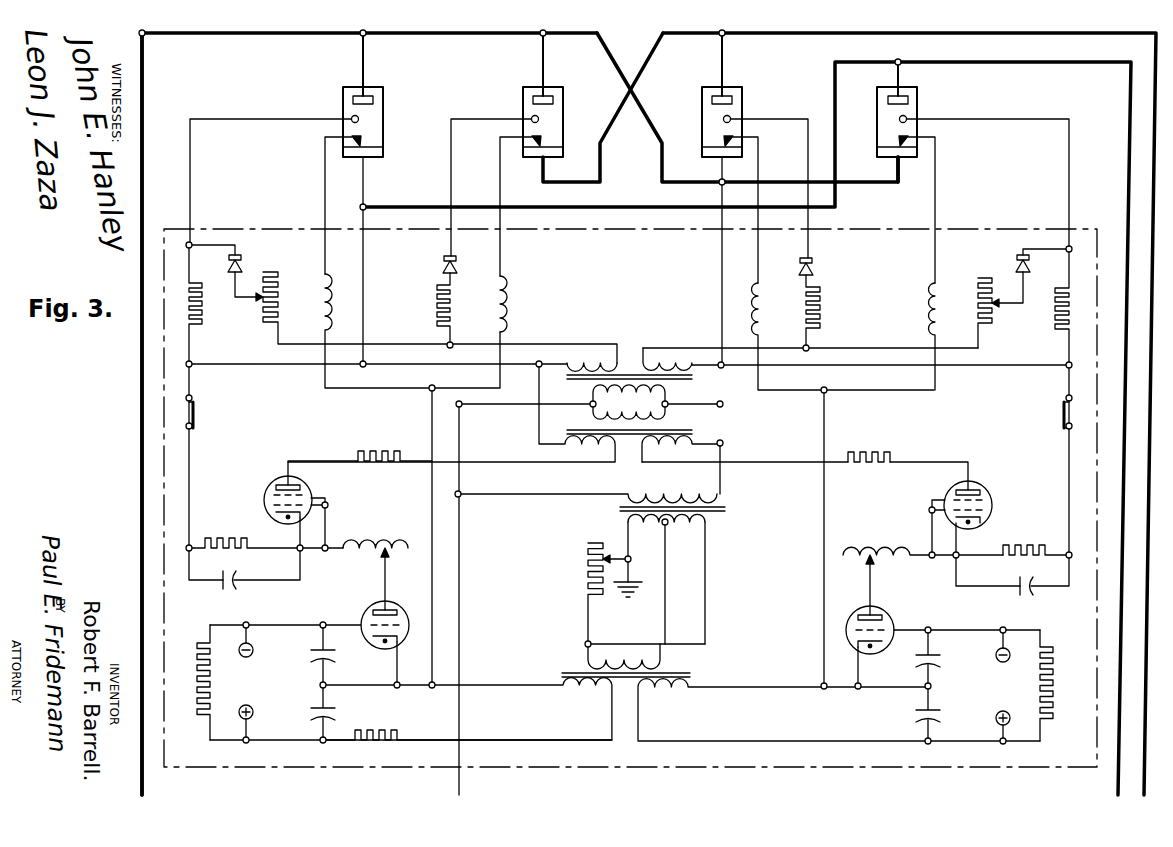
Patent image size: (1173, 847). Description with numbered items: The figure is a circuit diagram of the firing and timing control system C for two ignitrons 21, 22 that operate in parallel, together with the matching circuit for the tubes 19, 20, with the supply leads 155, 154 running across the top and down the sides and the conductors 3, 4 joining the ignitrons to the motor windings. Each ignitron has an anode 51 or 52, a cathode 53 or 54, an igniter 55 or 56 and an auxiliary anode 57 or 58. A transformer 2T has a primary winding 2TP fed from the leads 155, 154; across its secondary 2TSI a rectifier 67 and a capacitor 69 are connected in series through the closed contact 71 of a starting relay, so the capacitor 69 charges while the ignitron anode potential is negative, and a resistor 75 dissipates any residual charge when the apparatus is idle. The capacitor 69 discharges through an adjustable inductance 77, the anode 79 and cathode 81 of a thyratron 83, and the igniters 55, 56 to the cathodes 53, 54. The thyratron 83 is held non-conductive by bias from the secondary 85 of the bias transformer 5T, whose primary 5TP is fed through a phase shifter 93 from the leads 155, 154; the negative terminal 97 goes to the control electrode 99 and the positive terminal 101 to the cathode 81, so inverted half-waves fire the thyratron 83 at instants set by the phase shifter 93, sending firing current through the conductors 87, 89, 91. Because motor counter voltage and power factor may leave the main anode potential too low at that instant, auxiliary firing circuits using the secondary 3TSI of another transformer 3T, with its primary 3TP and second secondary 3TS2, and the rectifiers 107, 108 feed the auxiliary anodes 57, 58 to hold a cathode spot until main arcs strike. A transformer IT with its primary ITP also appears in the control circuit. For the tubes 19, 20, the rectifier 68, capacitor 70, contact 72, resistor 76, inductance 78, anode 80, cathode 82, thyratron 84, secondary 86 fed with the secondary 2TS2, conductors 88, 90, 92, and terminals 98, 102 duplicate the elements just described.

The conductor 3 is at (792, 34).
The conductor 4 is at (376, 206).
The lead 155 is at (213, 34).
The lead 154 is at (466, 522).
The tube 19 is at (562, 93).
The tube 20 is at (383, 93).
The ignitron 21 is at (741, 91).
The ignitron 22 is at (917, 93).
The anode 51 is at (733, 101).
The anode 52 is at (888, 101).
The cathode 53 is at (712, 158).
The cathode 54 is at (899, 160).
The igniter 55 is at (726, 143).
The igniter 56 is at (901, 143).
The auxiliary anode 57 is at (731, 121).
The auxiliary anode 58 is at (985, 174).
The firing and timing control system C is at (282, 229).
The rectifier 67 is at (979, 490).
The rectifier 68 is at (270, 488).
The capacitor 69 is at (1023, 589).
The capacitor 70 is at (234, 583).
The contact 71 is at (1060, 412).
The contact 72 is at (197, 412).
The resistor 75 is at (1018, 548).
The resistor 76 is at (224, 547).
The adjustable inductance 77 is at (870, 553).
The adjustable inductance 78 is at (365, 546).
The anode 79 is at (883, 615).
The anode 80 is at (394, 610).
The cathode 81 is at (888, 644).
The cathode 82 is at (401, 644).
The thyratron 83 is at (862, 596).
The thyratron 84 is at (373, 607).
The secondary 85 is at (662, 688).
The secondary 86 is at (590, 689).
The conductor 87 is at (824, 522).
The conductor 88 is at (431, 423).
The conductor 89 is at (762, 380).
The conductor 90 is at (501, 336).
The conductor 91 is at (936, 383).
The conductor 92 is at (323, 379).
The phase shifter 93 is at (694, 587).
The negative terminal 97 is at (999, 640).
The negative terminal 98 is at (250, 628).
The control electrode 99 is at (853, 632).
The positive terminal 101 is at (998, 739).
The positive terminal 102 is at (255, 740).
The rectifier 107 is at (813, 266).
The rectifier 108 is at (1018, 262).
The secondary winding 3TS2 is at (598, 366).
The secondary winding 3TSI is at (656, 366).
The transformer 3T is at (716, 387).
The primary winding 3TP is at (592, 388).
The primary winding 2TP is at (592, 424).
The transformer 2T is at (716, 430).
The secondary winding 2TS2 is at (578, 445).
The secondary winding 2TSI is at (656, 447).
The primary winding ITP is at (658, 496).
The transformer IT is at (618, 531).
The primary winding 5TP is at (624, 656).
The bias transformer 5T is at (723, 677).